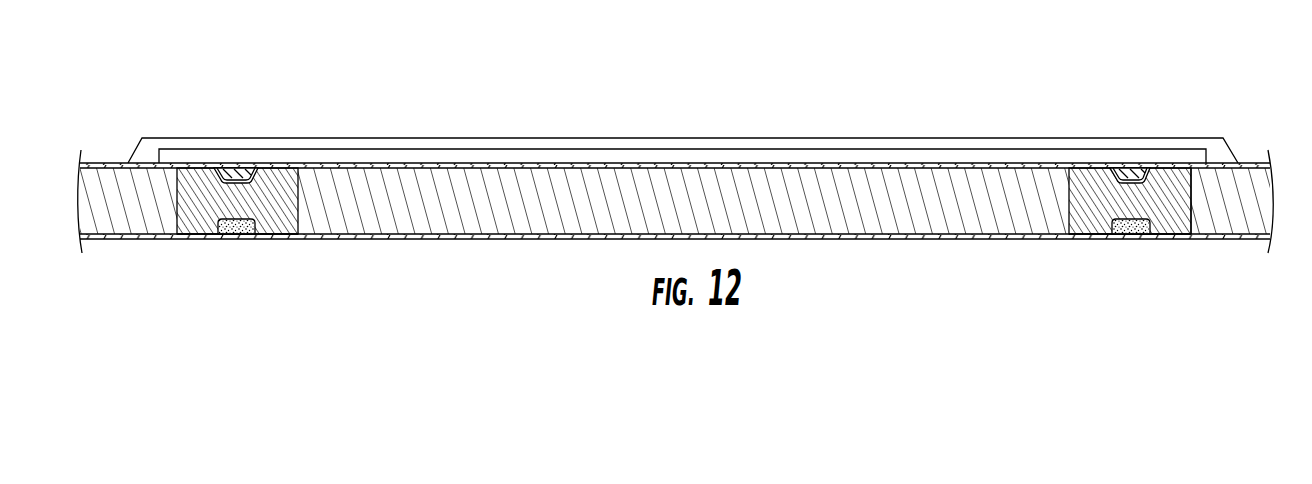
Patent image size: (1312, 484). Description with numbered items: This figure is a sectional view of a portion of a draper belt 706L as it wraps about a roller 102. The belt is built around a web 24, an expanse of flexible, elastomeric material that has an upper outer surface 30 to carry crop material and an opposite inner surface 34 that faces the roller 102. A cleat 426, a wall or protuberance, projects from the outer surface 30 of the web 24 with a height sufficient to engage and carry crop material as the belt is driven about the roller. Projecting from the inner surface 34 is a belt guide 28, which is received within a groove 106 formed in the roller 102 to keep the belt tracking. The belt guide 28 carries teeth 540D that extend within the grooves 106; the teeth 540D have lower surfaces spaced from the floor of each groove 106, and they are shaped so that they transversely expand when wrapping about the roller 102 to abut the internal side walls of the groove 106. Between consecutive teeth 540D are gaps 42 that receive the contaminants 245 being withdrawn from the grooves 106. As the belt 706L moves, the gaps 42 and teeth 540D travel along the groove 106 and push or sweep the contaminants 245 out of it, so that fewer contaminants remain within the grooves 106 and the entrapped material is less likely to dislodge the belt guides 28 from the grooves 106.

The draper belt 706L is at (92, 158).
The belt guide 28 is at (215, 188).
The teeth 540D is at (270, 166).
The upper outer surface 30 is at (450, 168).
The inner surface 34 is at (362, 170).
The web 24 is at (1043, 157).
The cleat 426 is at (1225, 140).
The roller 102 is at (1190, 192).
The grooves 106 is at (213, 226).
The contaminants 245 is at (230, 238).
The gaps 42 is at (243, 238).